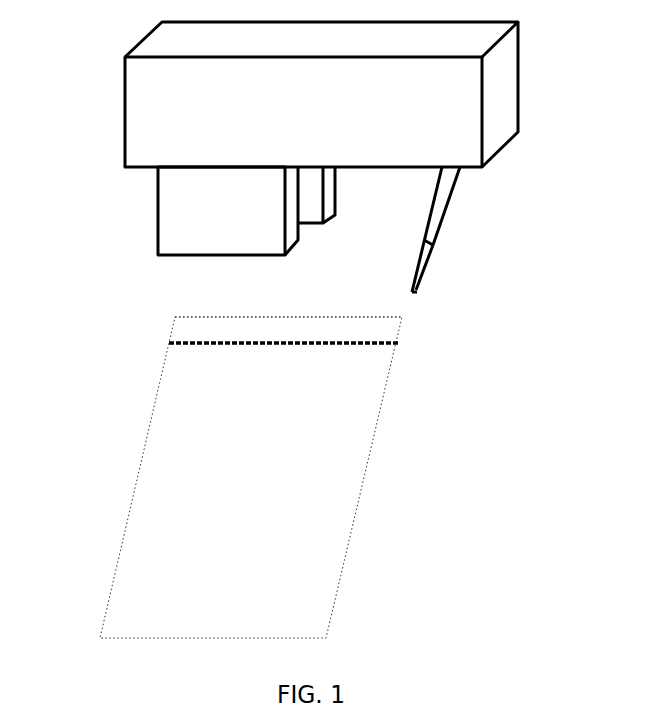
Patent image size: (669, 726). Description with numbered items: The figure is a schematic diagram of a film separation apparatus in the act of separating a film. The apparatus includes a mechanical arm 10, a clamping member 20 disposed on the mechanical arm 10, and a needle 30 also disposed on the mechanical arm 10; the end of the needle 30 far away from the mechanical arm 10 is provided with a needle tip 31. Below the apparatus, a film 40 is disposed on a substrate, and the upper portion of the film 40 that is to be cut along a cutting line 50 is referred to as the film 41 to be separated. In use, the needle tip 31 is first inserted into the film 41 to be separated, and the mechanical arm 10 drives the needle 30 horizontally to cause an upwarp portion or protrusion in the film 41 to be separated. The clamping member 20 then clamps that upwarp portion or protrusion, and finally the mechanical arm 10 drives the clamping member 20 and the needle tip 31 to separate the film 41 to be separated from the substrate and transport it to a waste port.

The mechanical arm 10 is at (458, 120).
The clamping member 20 is at (178, 211).
The needle 30 is at (508, 229).
The needle tip 31 is at (508, 259).
The film 40 is at (294, 477).
The film to be separated 41 is at (345, 313).
The cutting line 50 is at (337, 379).